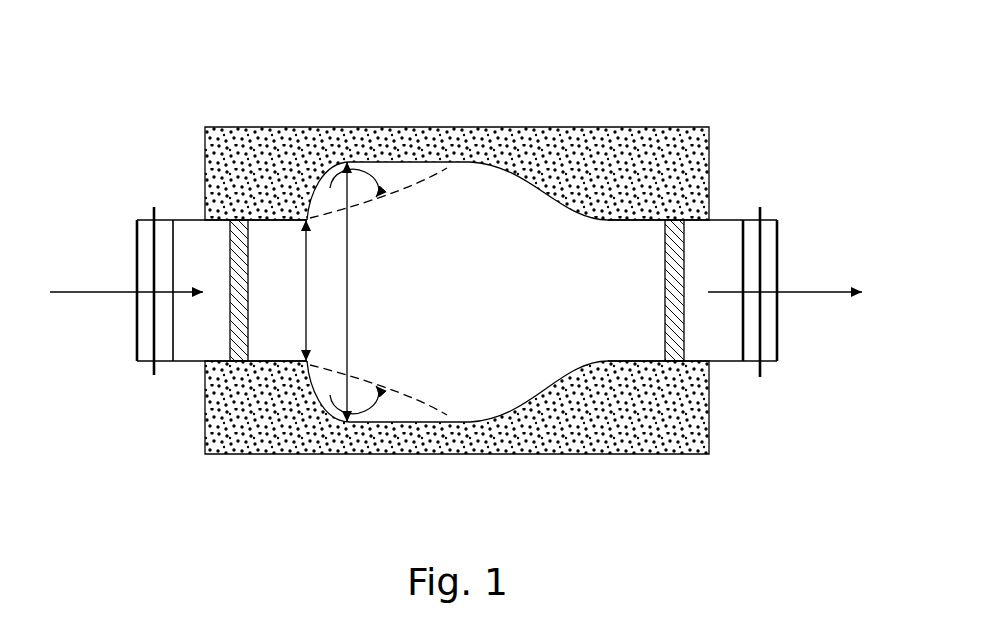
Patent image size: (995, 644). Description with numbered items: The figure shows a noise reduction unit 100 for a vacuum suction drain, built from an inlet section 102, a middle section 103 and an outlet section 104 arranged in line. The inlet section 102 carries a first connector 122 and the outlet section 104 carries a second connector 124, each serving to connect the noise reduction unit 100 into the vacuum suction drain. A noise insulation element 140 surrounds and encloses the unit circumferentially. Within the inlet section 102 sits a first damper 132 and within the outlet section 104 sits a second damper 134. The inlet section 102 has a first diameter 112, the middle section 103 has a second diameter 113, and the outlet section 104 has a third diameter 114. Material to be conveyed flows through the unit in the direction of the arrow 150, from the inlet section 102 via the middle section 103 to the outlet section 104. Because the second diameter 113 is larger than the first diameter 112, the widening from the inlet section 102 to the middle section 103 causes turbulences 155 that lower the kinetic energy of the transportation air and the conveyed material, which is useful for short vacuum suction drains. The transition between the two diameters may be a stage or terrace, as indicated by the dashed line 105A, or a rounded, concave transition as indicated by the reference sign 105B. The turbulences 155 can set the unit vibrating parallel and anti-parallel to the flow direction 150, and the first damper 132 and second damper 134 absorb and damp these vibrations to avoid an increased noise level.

The noise reduction unit 100 is at (306, 80).
The inlet section 102 is at (222, 339).
The middle section 103 is at (523, 340).
The outlet section 104 is at (733, 348).
The dashed line 105A is at (310, 164).
The rounded transition 105B is at (323, 176).
The first diameter 112 is at (307, 322).
The second diameter 113 is at (306, 362).
The third diameter 114 is at (608, 328).
The first connector 122 is at (135, 216).
The second connector 124 is at (775, 214).
The first damper 132 is at (228, 261).
The second damper 134 is at (689, 249).
The noise insulation element 140 is at (275, 147).
The arrow 150 is at (76, 287).
The turbulences 155 is at (357, 404).